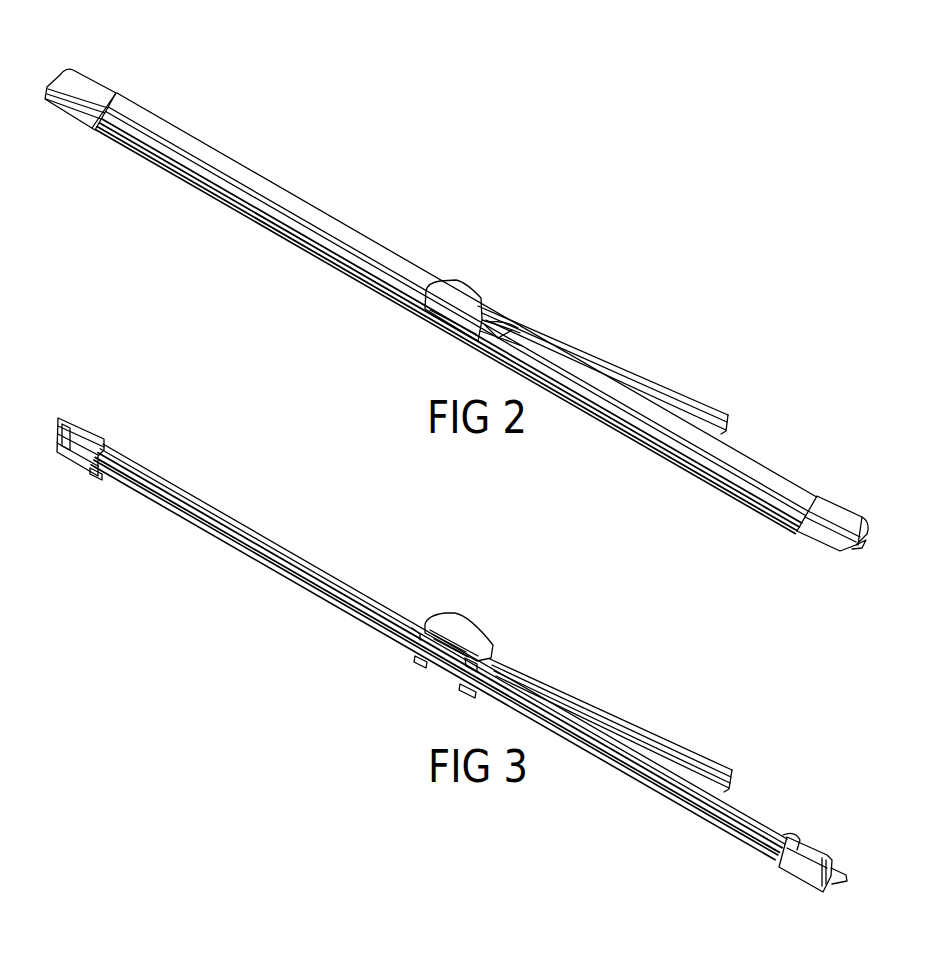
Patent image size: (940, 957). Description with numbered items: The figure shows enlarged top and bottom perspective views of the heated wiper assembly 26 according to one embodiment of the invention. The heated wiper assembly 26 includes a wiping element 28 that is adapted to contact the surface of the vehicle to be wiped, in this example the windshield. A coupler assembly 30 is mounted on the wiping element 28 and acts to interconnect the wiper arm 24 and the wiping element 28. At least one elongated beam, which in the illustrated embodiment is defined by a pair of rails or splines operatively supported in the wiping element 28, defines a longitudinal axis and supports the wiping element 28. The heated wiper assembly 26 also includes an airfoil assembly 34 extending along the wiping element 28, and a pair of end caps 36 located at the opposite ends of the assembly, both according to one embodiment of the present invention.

In FIG. 2, the wiper arm 24 is at (692, 396).
In FIG. 3, the wiper arm 24 is at (620, 706).
In FIG. 2, the heated wiper assembly 26 is at (474, 292).
In FIG. 3, the heated wiper assembly 26 is at (461, 620).
In FIG. 2, the wiping element 28 is at (456, 318).
In FIG. 3, the wiping element 28 is at (645, 786).
In FIG. 2, the coupler assembly 30 is at (462, 278).
In FIG. 3, the coupler assembly 30 is at (462, 621).
In FIG. 2, the airfoil assembly 34 is at (243, 164).
In FIG. 2, the end caps 36 is at (114, 82).
In FIG. 3, the end caps 36 is at (82, 421).